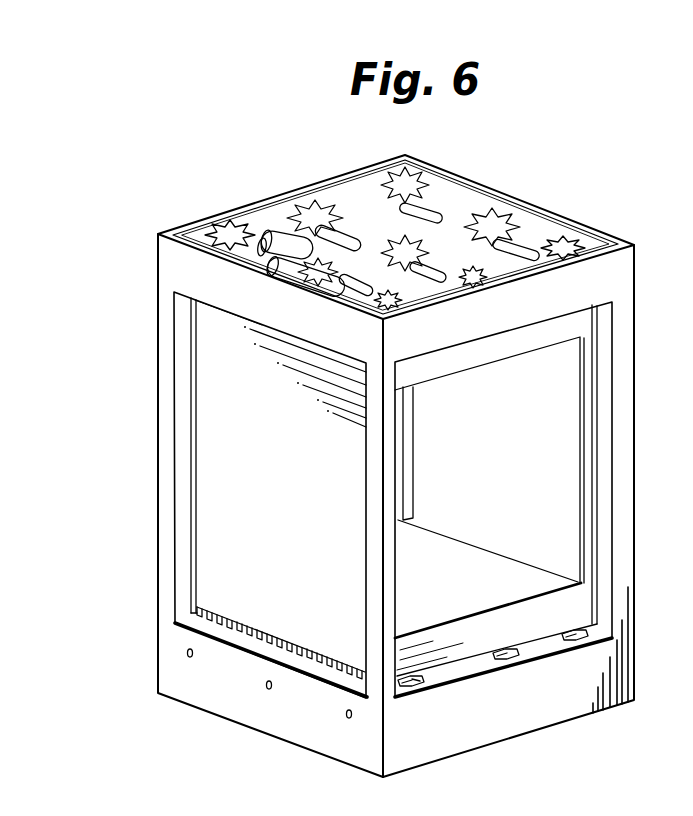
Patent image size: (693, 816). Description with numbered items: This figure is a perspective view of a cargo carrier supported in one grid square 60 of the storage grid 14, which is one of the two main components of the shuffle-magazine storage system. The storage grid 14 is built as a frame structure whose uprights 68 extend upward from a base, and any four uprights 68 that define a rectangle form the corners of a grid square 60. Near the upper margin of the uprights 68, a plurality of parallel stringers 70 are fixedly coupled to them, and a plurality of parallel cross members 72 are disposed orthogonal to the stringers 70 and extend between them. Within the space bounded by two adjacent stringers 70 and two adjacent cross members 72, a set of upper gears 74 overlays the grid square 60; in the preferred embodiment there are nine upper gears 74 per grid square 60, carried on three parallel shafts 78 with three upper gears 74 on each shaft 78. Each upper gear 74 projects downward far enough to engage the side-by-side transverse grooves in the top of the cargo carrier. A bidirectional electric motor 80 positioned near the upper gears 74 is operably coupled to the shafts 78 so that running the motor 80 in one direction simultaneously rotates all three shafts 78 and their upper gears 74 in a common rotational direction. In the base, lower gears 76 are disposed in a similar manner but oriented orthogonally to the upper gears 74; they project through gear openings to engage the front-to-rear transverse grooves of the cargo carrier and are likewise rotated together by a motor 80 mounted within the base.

The storage grid 14 is at (228, 432).
The grid square 60 is at (168, 642).
The uprights 68 is at (160, 516).
The stringers 70 is at (274, 247).
The cross members 72 is at (213, 280).
The upper gears 74 is at (313, 202).
The lower gears 76 is at (415, 690).
The shafts 78 is at (432, 217).
The bidirectional electric motor 80 is at (262, 252).